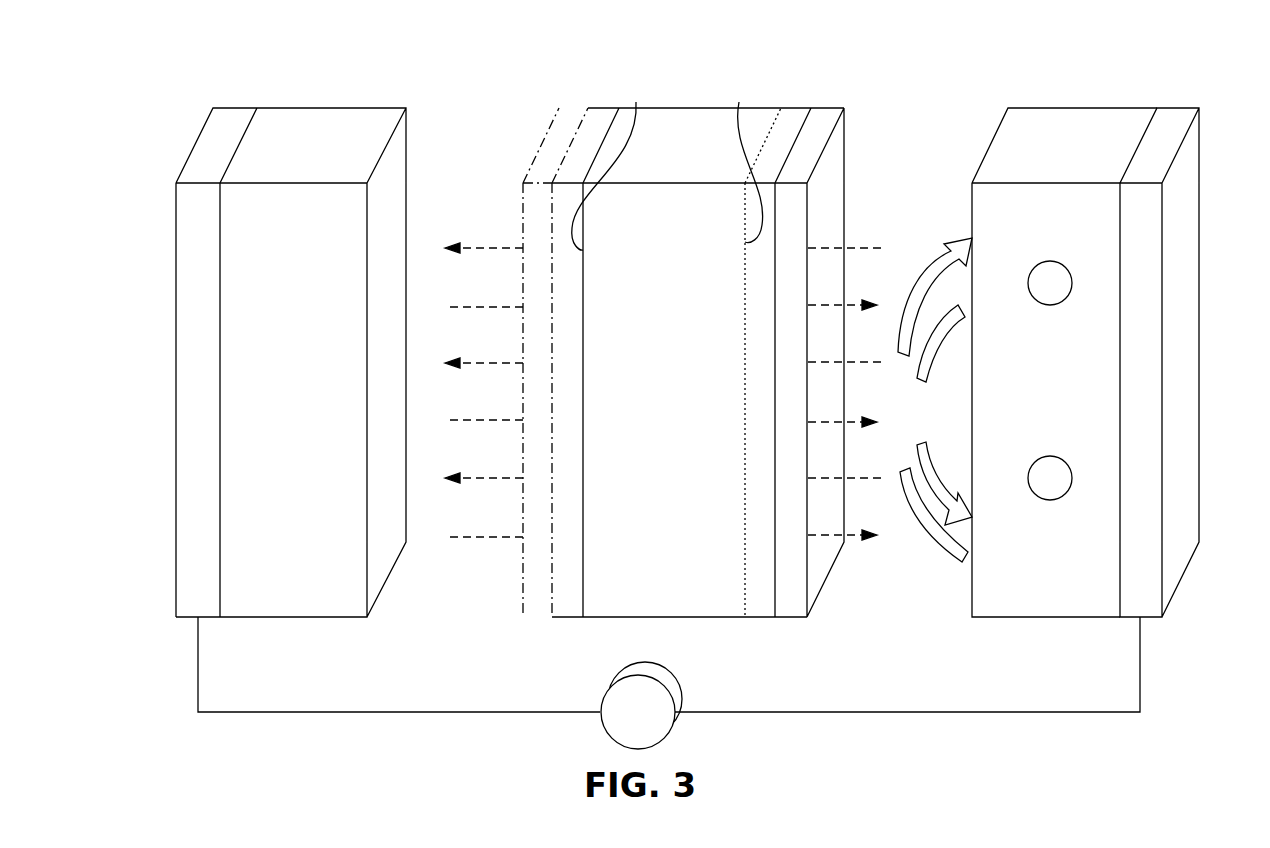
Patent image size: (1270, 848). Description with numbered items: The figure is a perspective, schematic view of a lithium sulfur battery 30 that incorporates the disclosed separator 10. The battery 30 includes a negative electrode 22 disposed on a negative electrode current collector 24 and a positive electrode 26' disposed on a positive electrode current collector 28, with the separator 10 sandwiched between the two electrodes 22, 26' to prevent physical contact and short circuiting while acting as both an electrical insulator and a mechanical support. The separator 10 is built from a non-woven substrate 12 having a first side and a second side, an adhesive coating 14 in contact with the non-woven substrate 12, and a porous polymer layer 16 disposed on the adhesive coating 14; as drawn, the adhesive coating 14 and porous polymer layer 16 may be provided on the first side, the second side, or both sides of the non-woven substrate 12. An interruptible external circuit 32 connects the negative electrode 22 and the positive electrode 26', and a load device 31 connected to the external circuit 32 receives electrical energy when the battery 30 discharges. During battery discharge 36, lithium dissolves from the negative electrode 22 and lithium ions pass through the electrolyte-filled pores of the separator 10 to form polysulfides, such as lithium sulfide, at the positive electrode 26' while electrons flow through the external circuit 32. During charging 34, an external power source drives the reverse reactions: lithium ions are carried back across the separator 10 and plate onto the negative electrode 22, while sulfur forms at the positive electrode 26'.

The separator 10 is at (684, 322).
The non-woven substrate 12 is at (667, 118).
The adhesive coating 14 is at (607, 117).
The porous polymer layer 16 is at (572, 117).
The negative electrode 22 is at (288, 392).
The negative electrode current collector 24 is at (197, 380).
The positive electrode 26' is at (1064, 362).
The positive electrode current collector 28 is at (1178, 210).
The lithium sulfur battery 30 is at (733, 684).
The load device 31 is at (629, 727).
The external circuit 32 is at (902, 714).
The charging 34 is at (490, 246).
The battery discharge 36 is at (850, 303).